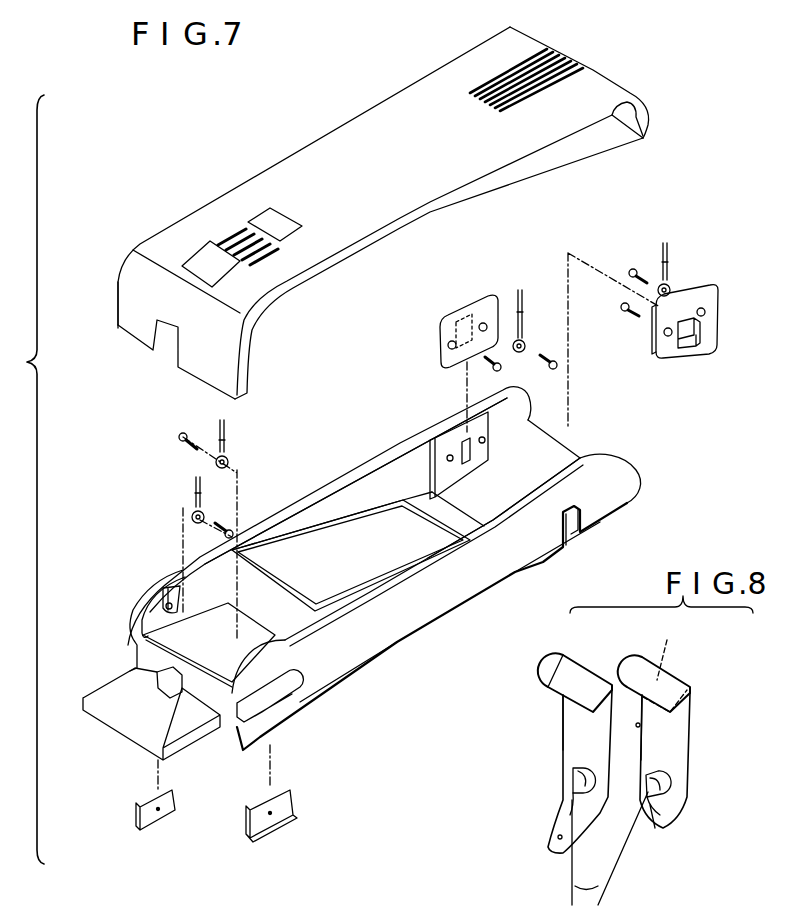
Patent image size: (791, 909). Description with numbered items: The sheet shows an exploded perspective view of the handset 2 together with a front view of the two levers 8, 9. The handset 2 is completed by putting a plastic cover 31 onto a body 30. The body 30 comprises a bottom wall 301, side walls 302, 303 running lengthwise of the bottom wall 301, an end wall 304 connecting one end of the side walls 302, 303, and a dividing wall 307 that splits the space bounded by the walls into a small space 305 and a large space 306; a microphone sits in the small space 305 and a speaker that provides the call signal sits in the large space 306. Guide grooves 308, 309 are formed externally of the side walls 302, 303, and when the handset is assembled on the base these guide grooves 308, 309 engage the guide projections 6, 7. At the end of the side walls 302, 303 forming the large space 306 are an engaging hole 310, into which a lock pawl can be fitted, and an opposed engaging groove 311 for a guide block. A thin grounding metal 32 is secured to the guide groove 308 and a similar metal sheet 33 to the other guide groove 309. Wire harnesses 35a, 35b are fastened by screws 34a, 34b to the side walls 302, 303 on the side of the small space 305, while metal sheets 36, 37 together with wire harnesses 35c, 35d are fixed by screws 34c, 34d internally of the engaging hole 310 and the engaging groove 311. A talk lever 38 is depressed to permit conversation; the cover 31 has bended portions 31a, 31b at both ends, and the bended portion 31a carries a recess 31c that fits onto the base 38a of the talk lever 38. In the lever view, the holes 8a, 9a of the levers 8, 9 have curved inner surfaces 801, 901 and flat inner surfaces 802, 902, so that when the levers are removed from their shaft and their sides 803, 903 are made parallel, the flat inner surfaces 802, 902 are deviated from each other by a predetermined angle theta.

In FIG. 7, the handset 2 is at (625, 199).
In FIG. 7, the cover 31 is at (377, 247).
In FIG. 7, the bended portion 31a is at (248, 331).
In FIG. 7, the bended portion 31b is at (625, 112).
In FIG. 7, the recess 31c is at (177, 353).
In FIG. 7, the body 30 is at (456, 596).
In FIG. 7, the bottom wall 301 is at (428, 535).
In FIG. 7, the side wall 302 is at (425, 605).
In FIG. 7, the side wall 303 is at (353, 487).
In FIG. 7, the end wall 304 is at (213, 684).
In FIG. 7, the small space 305 is at (272, 638).
In FIG. 7, the large space 306 is at (370, 570).
In FIG. 7, the dividing wall 307 is at (287, 580).
In FIG. 7, the guide groove 308 is at (293, 683).
In FIG. 7, the guide groove 309 is at (130, 650).
In FIG. 7, the engaging hole 310 is at (578, 520).
In FIG. 7, the engaging groove 311 is at (450, 450).
In FIG. 7, the thin metal 32 is at (285, 795).
In FIG. 7, the metal sheet 33 is at (170, 807).
In FIG. 7, the screw 34a is at (179, 436).
In FIG. 7, the screw 34b is at (229, 528).
In FIG. 7, the screw 34c is at (622, 307).
In FIG. 7, the screw 34d is at (507, 372).
In FIG. 7, the wire harness 35a is at (228, 430).
In FIG. 7, the wire harness 35b is at (195, 487).
In FIG. 7, the wire harness 35c is at (661, 262).
In FIG. 7, the wire harness 35d is at (522, 306).
In FIG. 7, the metal sheet 36 is at (664, 360).
In FIG. 7, the metal sheet 37 is at (478, 302).
In FIG. 7, the talk lever 38 is at (133, 747).
In FIG. 7, the base of talk lever 38a is at (176, 692).
In FIG. 8, the guide projection 6 is at (575, 670).
In FIG. 8, the guide projection 7 is at (667, 665).
In FIG. 8, the lever 8 is at (573, 738).
In FIG. 8, the hole 8a is at (573, 797).
In FIG. 8, the curved inner surface 801 is at (585, 790).
In FIG. 8, the flat inner surface 802 is at (573, 777).
In FIG. 8, the side 803 is at (563, 708).
In FIG. 8, the lever 9 is at (682, 747).
In FIG. 8, the hole 9a is at (647, 793).
In FIG. 8, the curved inner surface 901 is at (667, 790).
In FIG. 8, the flat inner surface 902 is at (663, 778).
In FIG. 8, the side 903 is at (640, 725).